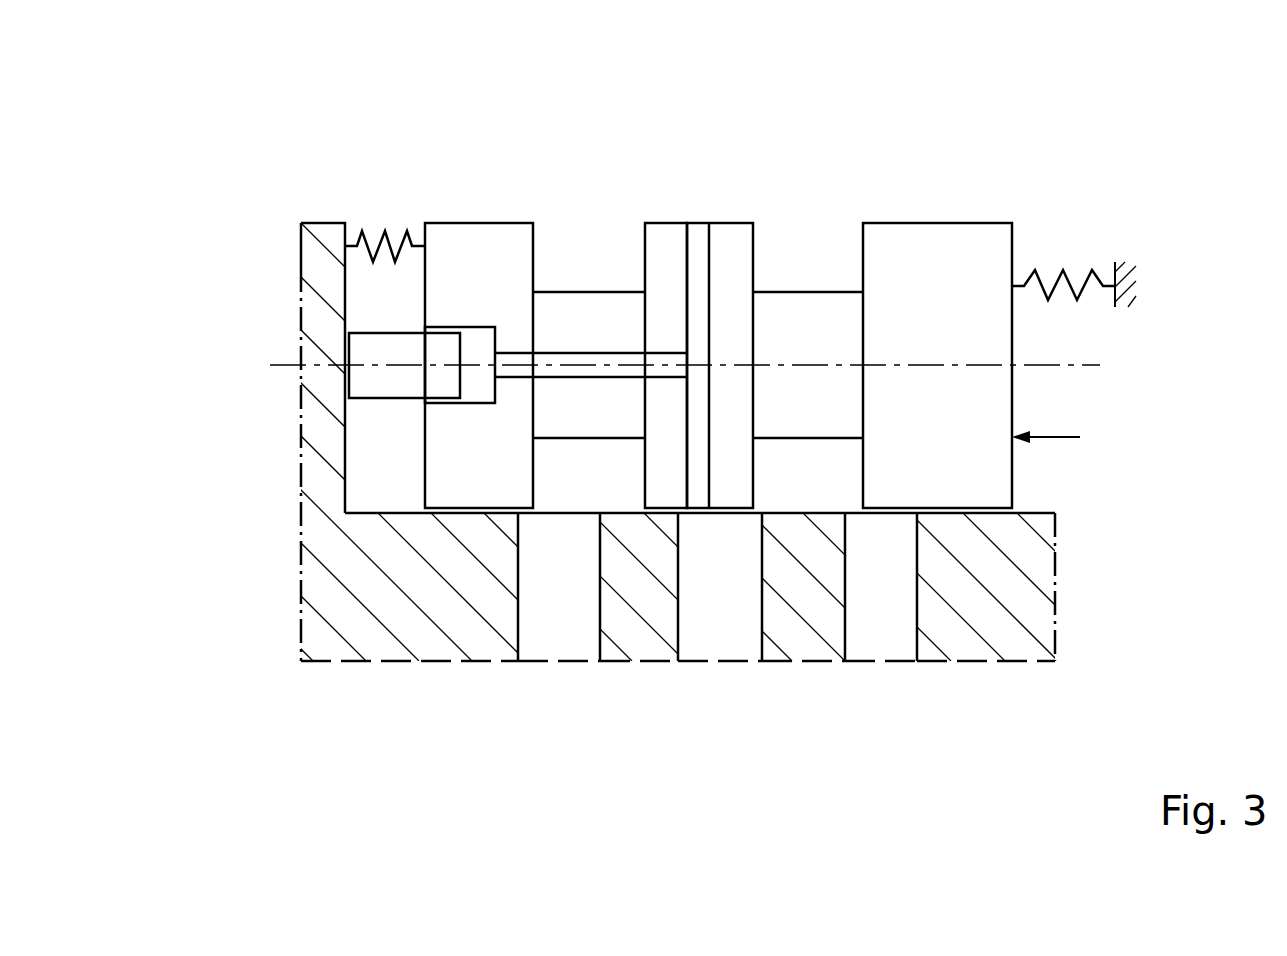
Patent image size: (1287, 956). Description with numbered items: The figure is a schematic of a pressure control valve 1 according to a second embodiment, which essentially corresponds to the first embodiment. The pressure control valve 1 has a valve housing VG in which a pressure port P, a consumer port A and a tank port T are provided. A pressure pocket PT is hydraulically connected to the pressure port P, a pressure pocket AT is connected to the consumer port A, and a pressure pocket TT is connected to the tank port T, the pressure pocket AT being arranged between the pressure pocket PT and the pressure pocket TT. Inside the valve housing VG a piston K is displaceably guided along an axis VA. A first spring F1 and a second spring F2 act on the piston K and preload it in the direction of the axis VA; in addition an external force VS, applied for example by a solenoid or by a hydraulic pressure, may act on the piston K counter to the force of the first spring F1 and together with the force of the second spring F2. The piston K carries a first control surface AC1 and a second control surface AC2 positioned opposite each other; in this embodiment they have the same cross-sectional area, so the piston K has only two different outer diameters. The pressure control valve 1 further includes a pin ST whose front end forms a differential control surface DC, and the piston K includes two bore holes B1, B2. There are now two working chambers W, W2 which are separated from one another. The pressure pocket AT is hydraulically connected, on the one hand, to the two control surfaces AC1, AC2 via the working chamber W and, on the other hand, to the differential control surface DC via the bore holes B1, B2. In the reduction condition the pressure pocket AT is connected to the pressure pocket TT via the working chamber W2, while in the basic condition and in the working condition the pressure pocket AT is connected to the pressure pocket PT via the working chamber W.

The pressure control valve 1 is at (1148, 187).
The first spring F1 is at (367, 207).
The second spring F2 is at (1075, 245).
The differential control surface DC is at (460, 348).
The pin ST is at (363, 358).
The bore hole B1 is at (591, 350).
The bore hole B2 is at (685, 232).
The first control surface AC1 is at (753, 253).
The second control surface AC2 is at (863, 252).
The piston K is at (956, 253).
The axis VA is at (1097, 365).
The external force VS is at (1080, 437).
The working chamber W2 is at (573, 478).
The working chamber W is at (832, 477).
The valve housing VG is at (365, 608).
The tank port T is at (555, 670).
The pressure pocket TT is at (577, 630).
The consumer port A is at (707, 672).
The pressure pocket AT is at (732, 632).
The pressure port P is at (885, 672).
The pressure pocket PT is at (895, 623).